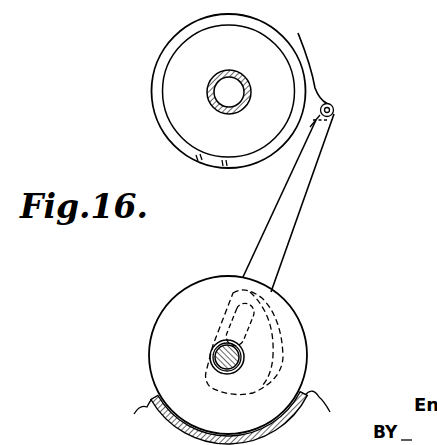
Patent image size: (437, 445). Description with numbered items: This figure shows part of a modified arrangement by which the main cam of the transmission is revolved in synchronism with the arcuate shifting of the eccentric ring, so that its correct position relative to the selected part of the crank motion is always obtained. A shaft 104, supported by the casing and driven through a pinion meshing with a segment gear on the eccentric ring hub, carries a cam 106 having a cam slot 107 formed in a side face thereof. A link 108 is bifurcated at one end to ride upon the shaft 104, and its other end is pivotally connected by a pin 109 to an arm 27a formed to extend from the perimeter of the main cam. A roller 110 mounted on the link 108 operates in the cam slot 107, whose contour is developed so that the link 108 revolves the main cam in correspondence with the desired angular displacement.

The arm 27a is at (247, 91).
The shaft 104 is at (211, 350).
The cam 106 is at (150, 341).
The cam slot 107 is at (283, 330).
The link 108 is at (272, 237).
The pin 109 is at (334, 110).
The roller 110 is at (240, 296).